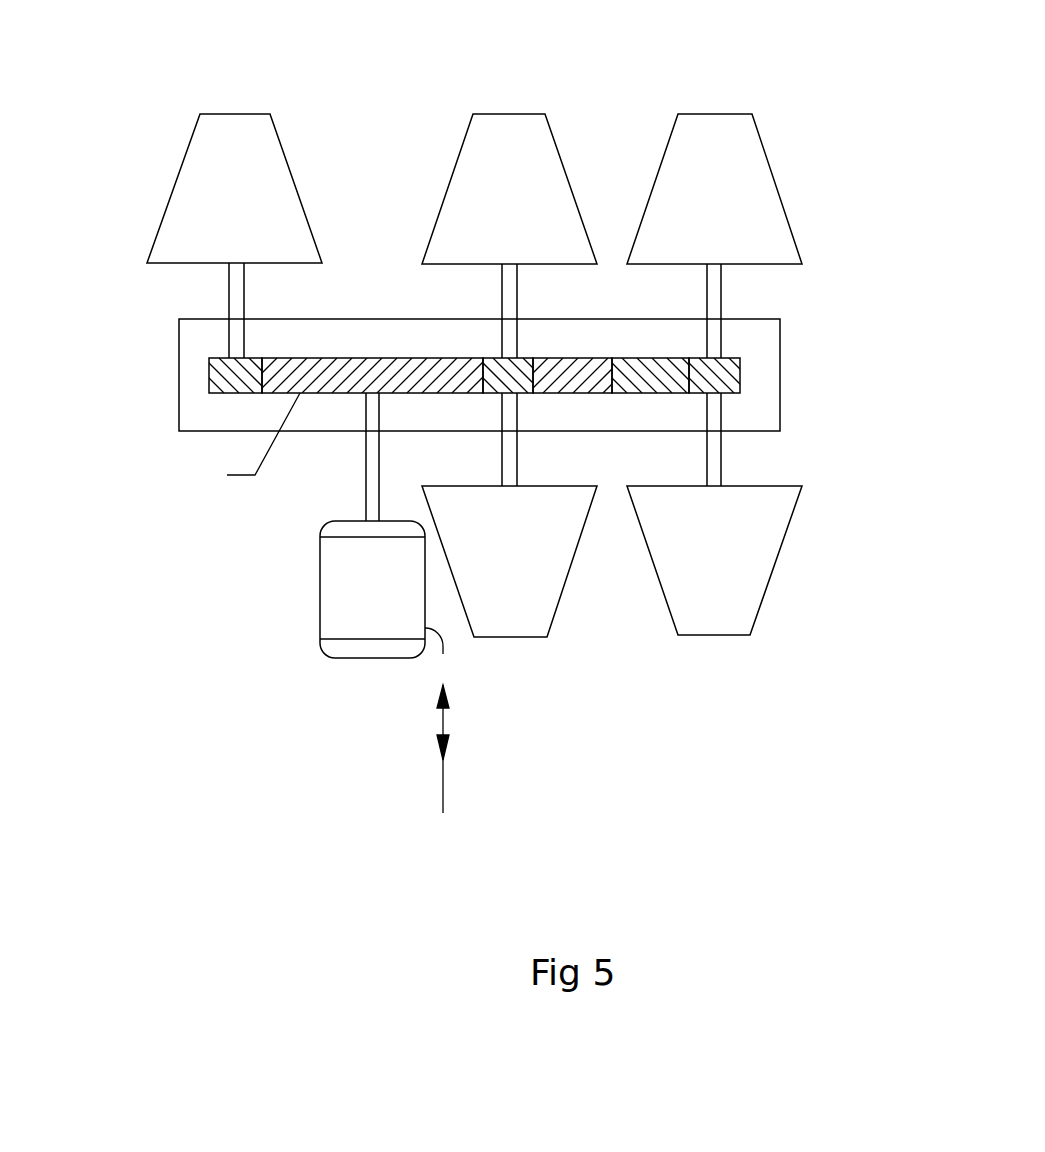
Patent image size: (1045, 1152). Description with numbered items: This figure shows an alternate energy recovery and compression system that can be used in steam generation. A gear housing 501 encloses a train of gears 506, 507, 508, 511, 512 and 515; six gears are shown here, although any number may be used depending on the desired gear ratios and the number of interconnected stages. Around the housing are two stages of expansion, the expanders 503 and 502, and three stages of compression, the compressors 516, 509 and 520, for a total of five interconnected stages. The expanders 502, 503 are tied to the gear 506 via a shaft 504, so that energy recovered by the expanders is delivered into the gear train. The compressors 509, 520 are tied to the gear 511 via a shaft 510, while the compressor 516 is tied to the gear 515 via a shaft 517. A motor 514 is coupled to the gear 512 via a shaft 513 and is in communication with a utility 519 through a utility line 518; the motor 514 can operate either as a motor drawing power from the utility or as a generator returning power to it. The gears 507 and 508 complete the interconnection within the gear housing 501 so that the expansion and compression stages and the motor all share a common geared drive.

The gear housing 501 is at (780, 362).
The expander 502 is at (770, 583).
The expander 503 is at (777, 183).
The shaft 504 is at (721, 343).
The gear 506 is at (740, 373).
The gear 507 is at (661, 358).
The gear 508 is at (600, 393).
The compressor 509 is at (565, 583).
The shaft 510 is at (517, 340).
The gear 511 is at (498, 393).
The gear 512 is at (281, 358).
The shaft 513 is at (366, 465).
The motor 514 is at (320, 587).
The gear 515 is at (210, 373).
The compressor 516 is at (200, 114).
The shaft 517 is at (229, 280).
The utility line 518 is at (443, 654).
The utility 519 is at (442, 778).
The compressor 520 is at (545, 114).